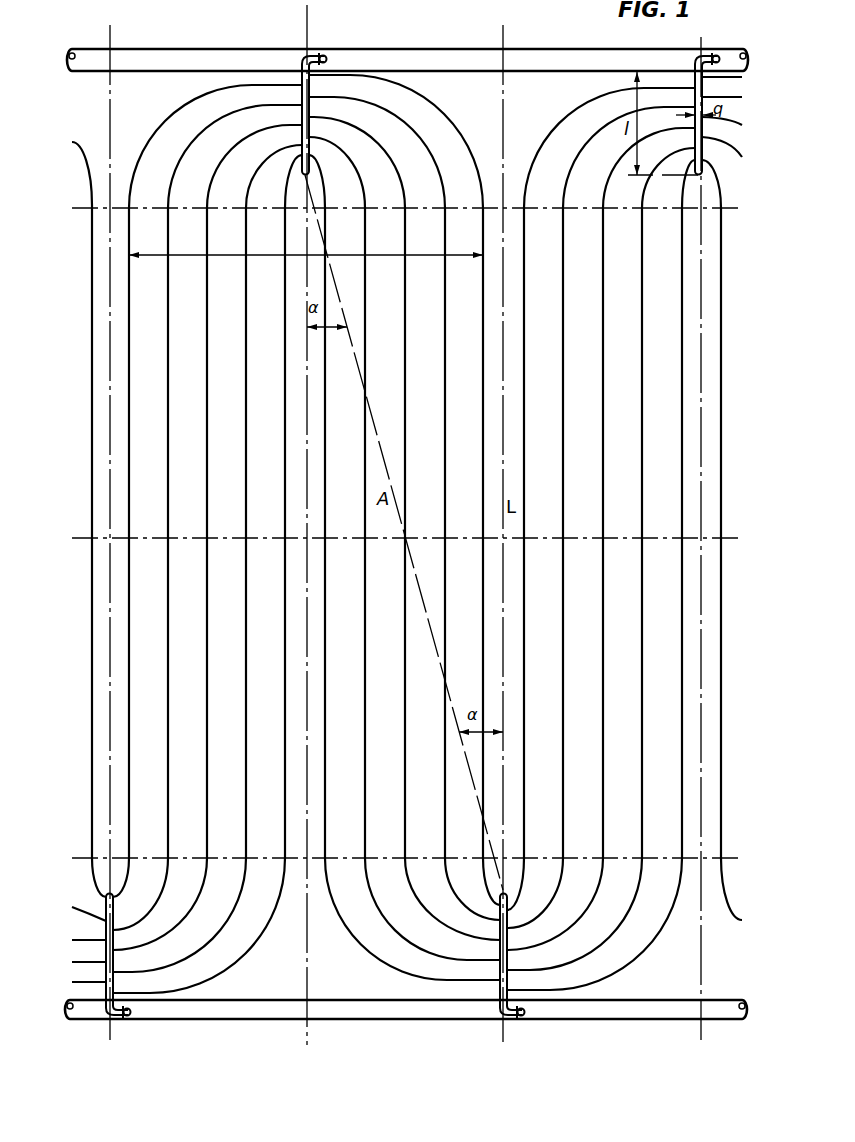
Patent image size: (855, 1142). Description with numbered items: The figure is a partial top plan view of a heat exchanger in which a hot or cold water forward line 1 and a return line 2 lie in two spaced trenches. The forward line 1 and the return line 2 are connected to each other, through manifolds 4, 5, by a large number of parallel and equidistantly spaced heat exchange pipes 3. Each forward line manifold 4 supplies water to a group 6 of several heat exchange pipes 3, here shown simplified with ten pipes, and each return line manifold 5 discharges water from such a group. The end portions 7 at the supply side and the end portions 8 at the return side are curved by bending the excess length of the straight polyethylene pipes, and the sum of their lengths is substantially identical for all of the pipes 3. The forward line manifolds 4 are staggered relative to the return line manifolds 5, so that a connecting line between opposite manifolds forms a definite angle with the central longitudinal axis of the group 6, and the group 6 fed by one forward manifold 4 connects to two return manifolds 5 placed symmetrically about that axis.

The forward line 1 is at (388, 62).
The return line 2 is at (347, 1008).
The heat exchange pipes 3 is at (91, 443).
The forward line manifold 4 is at (303, 70).
The return line manifold 5 is at (105, 1002).
The group of heat exchange pipes 6 is at (306, 244).
The curved end portions at the supply side 7 is at (170, 177).
The curved end portions at the return side 8 is at (202, 897).